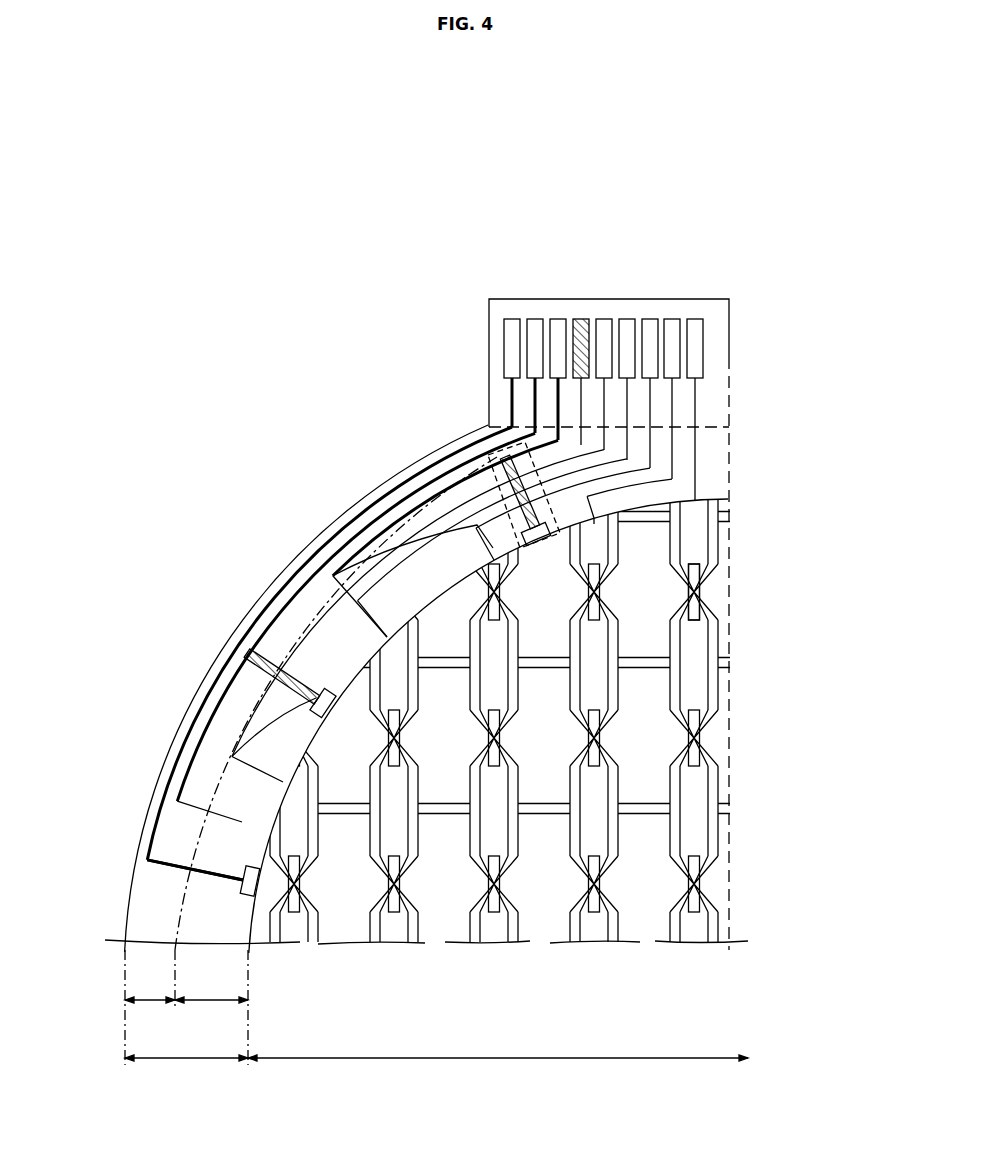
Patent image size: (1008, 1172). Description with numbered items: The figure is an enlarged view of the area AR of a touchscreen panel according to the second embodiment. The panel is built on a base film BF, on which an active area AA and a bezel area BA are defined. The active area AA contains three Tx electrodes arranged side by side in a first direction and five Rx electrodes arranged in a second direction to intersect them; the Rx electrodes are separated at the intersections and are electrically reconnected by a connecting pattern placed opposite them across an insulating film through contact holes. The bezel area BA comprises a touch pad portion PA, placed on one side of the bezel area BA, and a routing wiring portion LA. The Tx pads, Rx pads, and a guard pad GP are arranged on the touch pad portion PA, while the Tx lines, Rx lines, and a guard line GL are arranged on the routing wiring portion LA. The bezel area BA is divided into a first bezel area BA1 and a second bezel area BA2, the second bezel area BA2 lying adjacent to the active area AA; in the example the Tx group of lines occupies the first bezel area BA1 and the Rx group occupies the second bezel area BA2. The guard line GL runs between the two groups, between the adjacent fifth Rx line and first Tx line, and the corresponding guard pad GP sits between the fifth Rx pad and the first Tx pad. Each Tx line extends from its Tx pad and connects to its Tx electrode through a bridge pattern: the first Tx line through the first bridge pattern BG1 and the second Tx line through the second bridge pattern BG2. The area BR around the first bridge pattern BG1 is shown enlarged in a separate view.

The area AR is at (327, 148).
The touch pad portion PA is at (729, 314).
The guard pad GP is at (580, 319).
The guard line GL is at (581, 414).
The first bridge pattern BG1 is at (505, 480).
The second bridge pattern BG2 is at (262, 655).
The area BR is at (512, 500).
The routing wiring portion LA is at (146, 878).
The base film BF is at (127, 912).
The bezel area BA is at (186, 1019).
The first bezel area BA1 is at (150, 992).
The second bezel area BA2 is at (211, 1016).
The active area AA is at (498, 794).